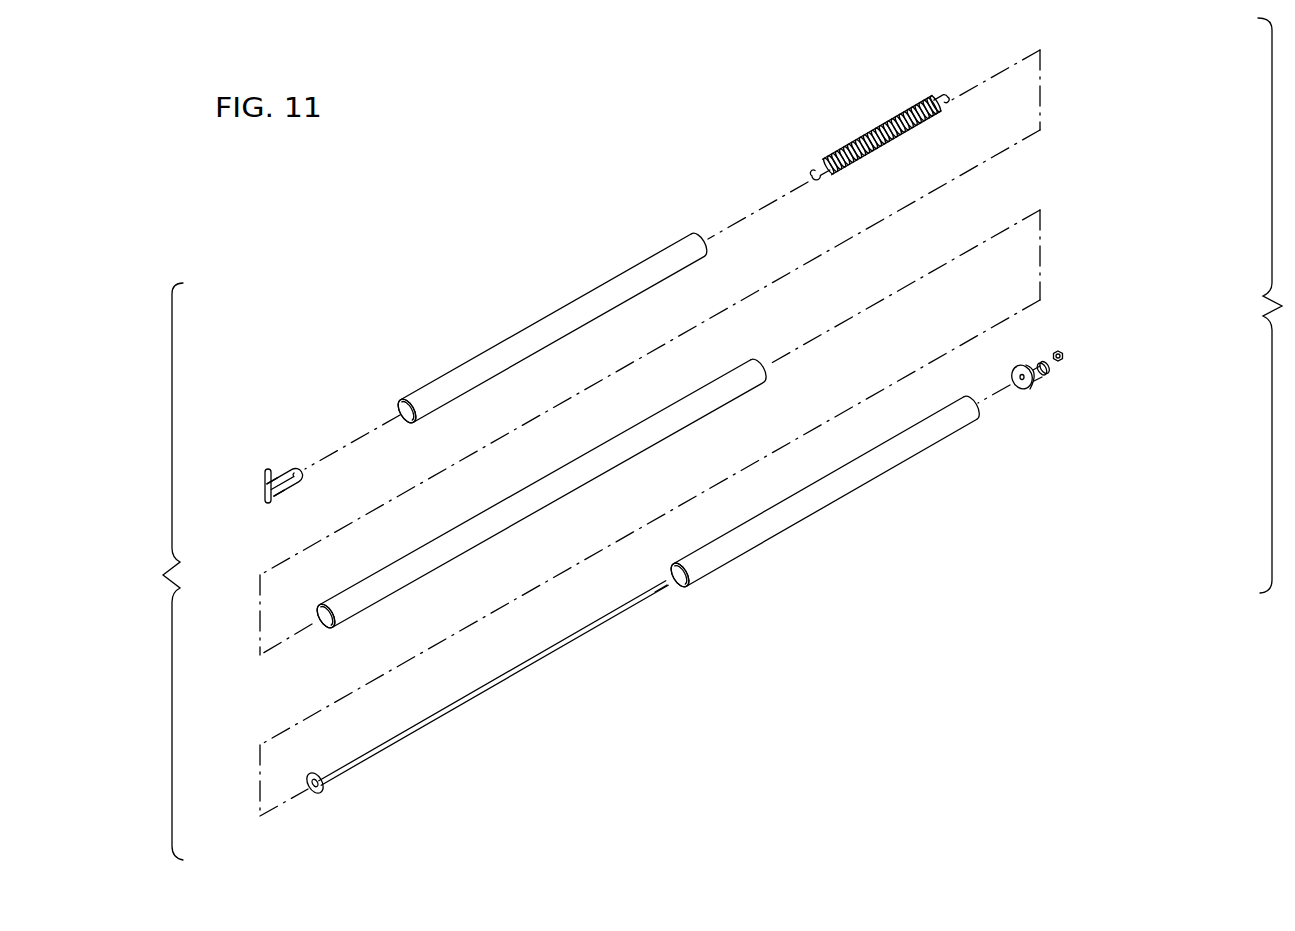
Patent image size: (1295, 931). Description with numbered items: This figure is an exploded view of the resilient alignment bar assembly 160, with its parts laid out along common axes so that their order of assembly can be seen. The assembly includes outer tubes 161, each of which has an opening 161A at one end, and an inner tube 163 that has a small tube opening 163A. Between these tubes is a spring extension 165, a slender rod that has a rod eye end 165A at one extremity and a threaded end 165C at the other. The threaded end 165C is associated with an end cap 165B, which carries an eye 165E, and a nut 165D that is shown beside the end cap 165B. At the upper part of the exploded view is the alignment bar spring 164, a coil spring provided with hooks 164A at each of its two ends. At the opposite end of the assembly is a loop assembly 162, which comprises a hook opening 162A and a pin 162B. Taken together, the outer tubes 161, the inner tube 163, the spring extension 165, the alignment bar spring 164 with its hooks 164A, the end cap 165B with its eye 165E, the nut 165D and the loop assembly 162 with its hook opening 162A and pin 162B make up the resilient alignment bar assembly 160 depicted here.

The resilient alignment bar assembly 160 is at (151, 571).
The outer tubes 161 is at (507, 340).
The opening 161A is at (403, 402).
The loop assembly 162 is at (289, 466).
The hook opening 162A is at (285, 503).
The pin 162B is at (265, 483).
The inner tube 163 is at (697, 397).
The small tube opening 163A is at (320, 621).
The alignment bar spring 164 is at (862, 137).
The hooks 164A is at (942, 98).
The spring extension 165 is at (443, 712).
The rod eye end 165A is at (321, 793).
The end cap 165B is at (1036, 384).
The threaded end 165C is at (661, 590).
The nut 165D is at (1067, 358).
The eye 165E is at (1042, 363).